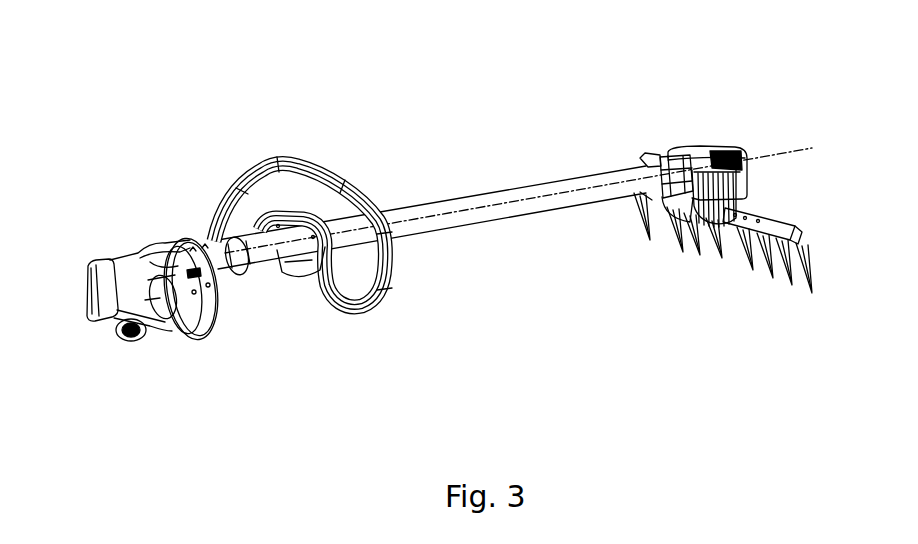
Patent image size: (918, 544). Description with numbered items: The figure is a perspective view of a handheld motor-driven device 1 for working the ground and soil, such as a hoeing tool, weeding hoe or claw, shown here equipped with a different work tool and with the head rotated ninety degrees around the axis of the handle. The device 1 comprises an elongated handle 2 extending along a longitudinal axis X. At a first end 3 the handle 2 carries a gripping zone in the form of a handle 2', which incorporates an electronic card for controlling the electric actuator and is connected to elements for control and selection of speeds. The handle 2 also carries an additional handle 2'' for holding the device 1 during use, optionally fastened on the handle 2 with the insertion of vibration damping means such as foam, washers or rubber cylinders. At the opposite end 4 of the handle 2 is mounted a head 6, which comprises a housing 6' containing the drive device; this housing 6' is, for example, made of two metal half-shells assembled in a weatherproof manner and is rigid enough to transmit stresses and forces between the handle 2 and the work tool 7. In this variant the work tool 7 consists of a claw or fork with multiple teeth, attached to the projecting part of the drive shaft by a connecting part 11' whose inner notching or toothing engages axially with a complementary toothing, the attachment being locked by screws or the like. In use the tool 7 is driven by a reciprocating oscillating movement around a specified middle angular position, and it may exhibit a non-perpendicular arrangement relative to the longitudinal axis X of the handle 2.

The handheld motor-driven device 1 is at (354, 333).
The handle 2 is at (432, 197).
The handle 2' is at (162, 327).
The additional handle 2'' is at (303, 182).
The first end 3 is at (257, 120).
The opposite end 4 is at (715, 105).
The head 6 is at (657, 146).
The housing 6' is at (716, 158).
The work tool 7 is at (784, 209).
The connecting part 11' is at (723, 265).
The longitudinal axis X is at (783, 150).